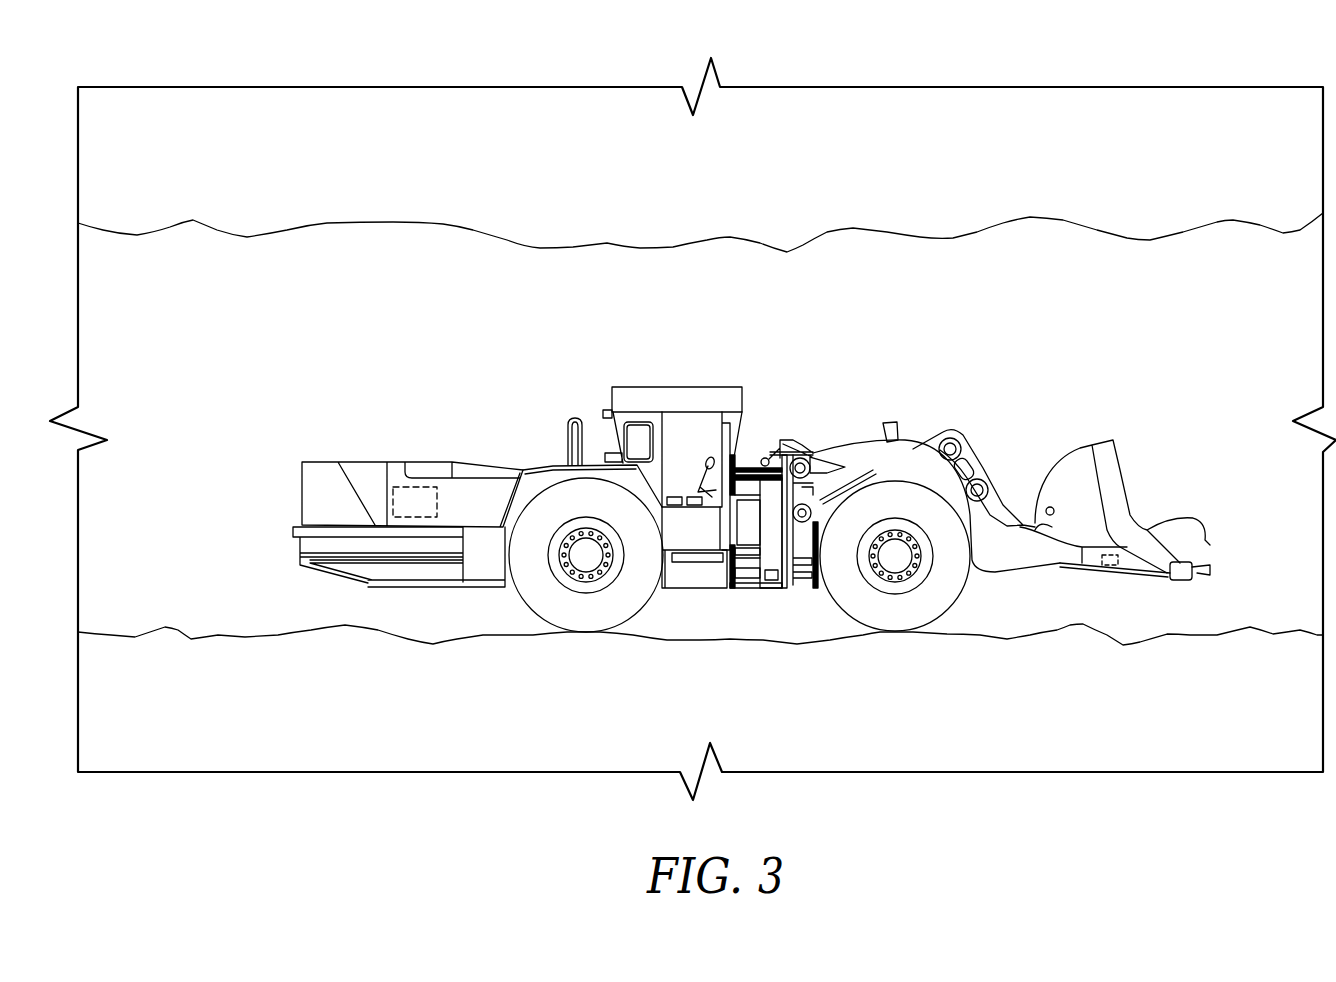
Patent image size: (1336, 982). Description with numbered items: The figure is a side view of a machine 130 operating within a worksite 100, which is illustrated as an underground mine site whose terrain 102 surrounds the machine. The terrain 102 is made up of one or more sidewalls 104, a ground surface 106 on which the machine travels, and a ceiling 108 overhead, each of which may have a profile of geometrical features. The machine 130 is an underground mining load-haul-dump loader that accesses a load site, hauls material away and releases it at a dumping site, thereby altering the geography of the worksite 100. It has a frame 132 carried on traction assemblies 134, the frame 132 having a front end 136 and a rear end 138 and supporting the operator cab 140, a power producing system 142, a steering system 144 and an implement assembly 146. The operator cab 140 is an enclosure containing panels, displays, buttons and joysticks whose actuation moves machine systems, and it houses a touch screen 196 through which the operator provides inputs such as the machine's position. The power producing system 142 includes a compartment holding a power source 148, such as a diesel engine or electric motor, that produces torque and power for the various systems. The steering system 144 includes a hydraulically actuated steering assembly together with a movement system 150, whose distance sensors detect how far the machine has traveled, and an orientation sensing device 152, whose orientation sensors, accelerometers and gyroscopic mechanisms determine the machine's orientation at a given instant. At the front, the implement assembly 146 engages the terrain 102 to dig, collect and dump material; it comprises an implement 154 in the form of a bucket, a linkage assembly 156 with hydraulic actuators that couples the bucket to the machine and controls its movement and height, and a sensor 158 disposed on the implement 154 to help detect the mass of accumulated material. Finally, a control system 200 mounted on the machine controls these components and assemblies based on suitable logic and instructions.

The worksite 100 is at (410, 282).
The terrain 102 is at (185, 245).
The sidewall 104 is at (288, 325).
The ground surface 106 is at (1273, 634).
The ceiling 108 is at (1062, 222).
The machine 130 is at (928, 315).
The frame 132 is at (700, 588).
The traction assembly 134 is at (537, 602).
The front end 136 is at (1060, 589).
The rear end 138 is at (280, 587).
The operator cab 140 is at (692, 456).
The power producing system 142 is at (399, 446).
The steering system 144 is at (710, 460).
The implement assembly 146 is at (1135, 488).
The power source 148 is at (437, 502).
The movement system 150 is at (695, 506).
The orientation sensing device 152 is at (672, 493).
The implement 154 is at (1148, 528).
The linkage assembly 156 is at (963, 442).
The sensor 158 is at (1123, 562).
The touch screen 196 is at (722, 436).
The control system 200 is at (635, 387).